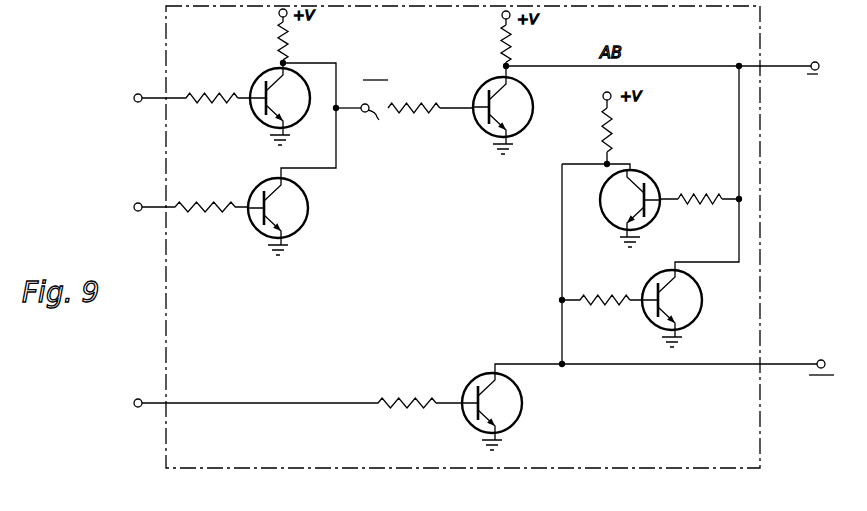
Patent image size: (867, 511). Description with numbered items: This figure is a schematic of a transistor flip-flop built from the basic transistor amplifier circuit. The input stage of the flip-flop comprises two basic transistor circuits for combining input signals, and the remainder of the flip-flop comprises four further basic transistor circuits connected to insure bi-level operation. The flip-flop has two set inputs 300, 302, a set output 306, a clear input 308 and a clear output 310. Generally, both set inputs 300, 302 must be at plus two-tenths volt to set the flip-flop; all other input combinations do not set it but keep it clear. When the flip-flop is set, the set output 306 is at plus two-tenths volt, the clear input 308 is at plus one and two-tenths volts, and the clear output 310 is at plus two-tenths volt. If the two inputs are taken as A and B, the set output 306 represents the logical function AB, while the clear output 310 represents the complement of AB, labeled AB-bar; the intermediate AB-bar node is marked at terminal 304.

The set input 300 is at (150, 97).
The set input 302 is at (175, 205).
The AB-bar terminal 304 is at (396, 112).
The set output 306 is at (796, 66).
The clear input 308 is at (266, 401).
The clear output 310 is at (801, 368).